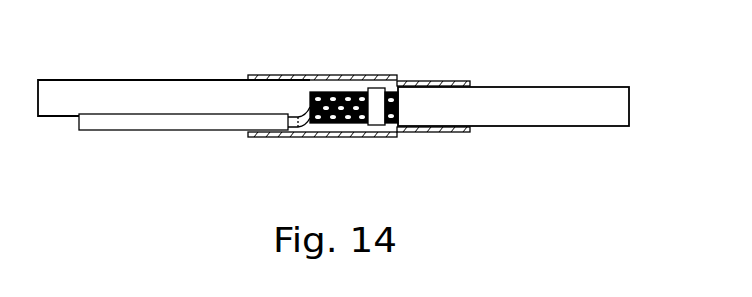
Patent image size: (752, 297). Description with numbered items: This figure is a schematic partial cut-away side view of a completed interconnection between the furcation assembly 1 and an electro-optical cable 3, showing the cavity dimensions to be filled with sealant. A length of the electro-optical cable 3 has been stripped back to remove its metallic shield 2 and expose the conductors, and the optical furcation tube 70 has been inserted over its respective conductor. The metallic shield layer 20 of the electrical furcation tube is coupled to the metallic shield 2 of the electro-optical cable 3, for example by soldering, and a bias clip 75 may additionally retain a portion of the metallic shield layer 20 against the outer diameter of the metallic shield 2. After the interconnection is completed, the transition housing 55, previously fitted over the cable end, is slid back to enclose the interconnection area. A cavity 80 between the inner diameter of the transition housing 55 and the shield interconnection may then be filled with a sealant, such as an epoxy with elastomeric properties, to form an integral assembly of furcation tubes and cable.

The furcation assembly 1 is at (148, 95).
The metallic shield 2 is at (390, 120).
The electro-optical cable 3 is at (543, 102).
The metallic shield layer 20 is at (335, 90).
The transition housing 55 is at (363, 136).
The optical furcation tube 70 is at (194, 124).
The bias clip 75 is at (376, 95).
The cavity 80 is at (308, 128).